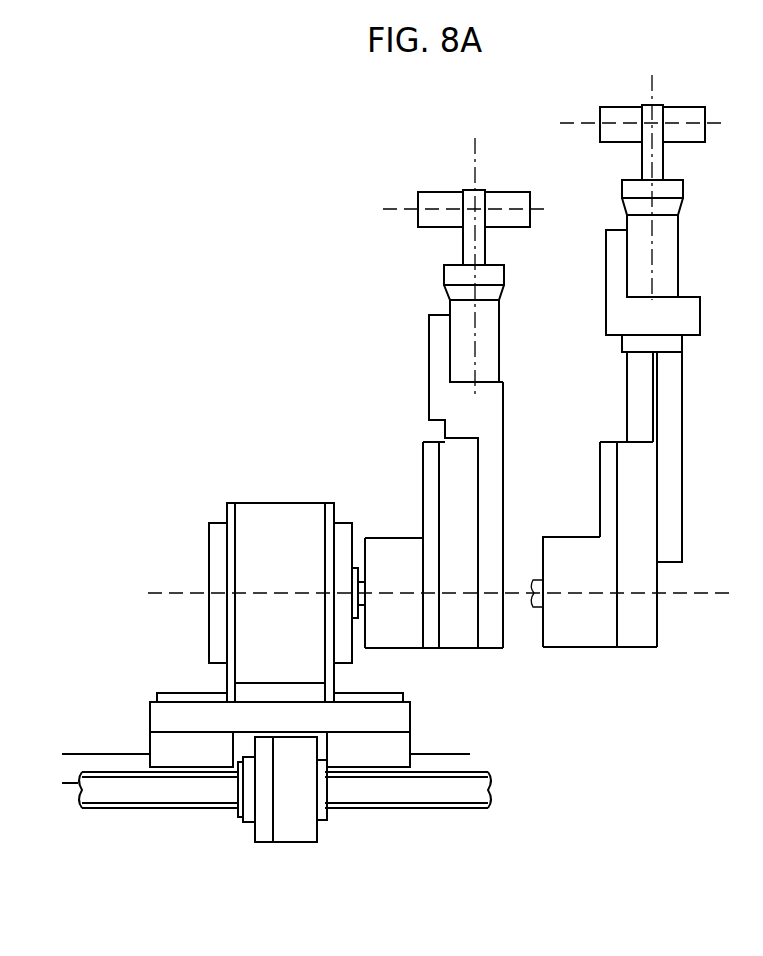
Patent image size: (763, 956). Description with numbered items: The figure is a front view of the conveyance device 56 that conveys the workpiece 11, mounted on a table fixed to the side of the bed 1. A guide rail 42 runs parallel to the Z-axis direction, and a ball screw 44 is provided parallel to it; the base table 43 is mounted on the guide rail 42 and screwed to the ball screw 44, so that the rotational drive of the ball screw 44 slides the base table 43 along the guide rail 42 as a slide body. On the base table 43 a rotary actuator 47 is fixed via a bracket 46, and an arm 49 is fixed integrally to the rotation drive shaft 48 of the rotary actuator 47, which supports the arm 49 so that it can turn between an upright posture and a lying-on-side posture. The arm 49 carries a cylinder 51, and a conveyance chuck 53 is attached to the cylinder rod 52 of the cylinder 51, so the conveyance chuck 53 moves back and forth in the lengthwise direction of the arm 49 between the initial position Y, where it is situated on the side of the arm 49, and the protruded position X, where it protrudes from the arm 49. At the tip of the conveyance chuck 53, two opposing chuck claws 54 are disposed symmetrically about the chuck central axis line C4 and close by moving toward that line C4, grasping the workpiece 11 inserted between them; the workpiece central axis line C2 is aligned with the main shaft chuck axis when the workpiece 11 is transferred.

The bed 1 is at (757, 545).
The workpiece 11 is at (438, 197).
The guide rail 42 is at (96, 752).
The base table 43 is at (393, 718).
The ball screw 44 is at (438, 787).
The bracket 46 is at (183, 694).
The rotary actuator 47 is at (275, 510).
The rotation drive shaft 48 is at (361, 582).
The arm 49 is at (425, 495).
The cylinder 51 is at (460, 630).
The cylinder rod 52 is at (634, 393).
The conveyance chuck 53 is at (500, 347).
The chuck claws 54 is at (486, 253).
The conveyance device 56 is at (393, 405).
The workpiece central axis line C2 is at (395, 205).
The chuck central axis line C4 is at (473, 178).
The protruded position X is at (688, 214).
The initial position Y is at (432, 283).